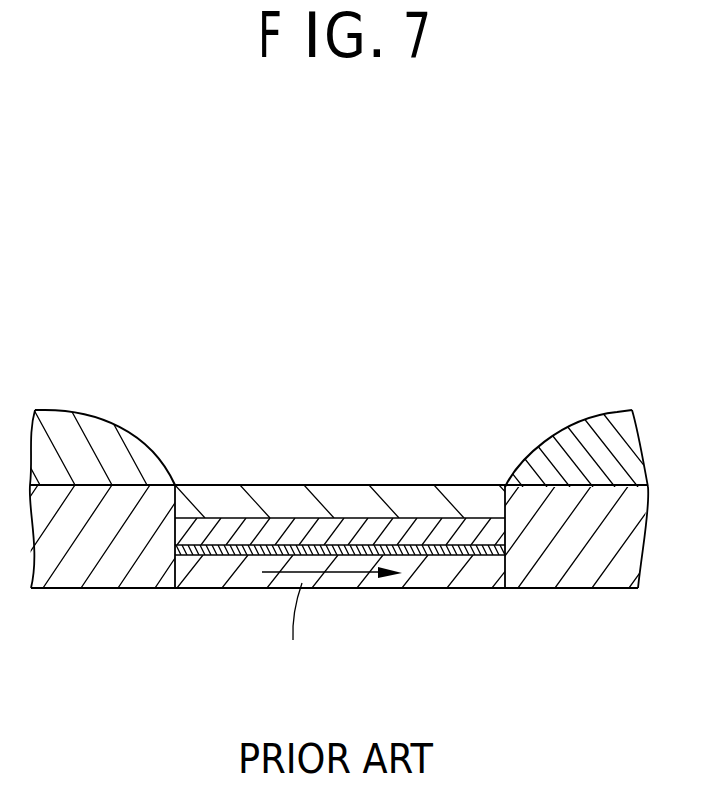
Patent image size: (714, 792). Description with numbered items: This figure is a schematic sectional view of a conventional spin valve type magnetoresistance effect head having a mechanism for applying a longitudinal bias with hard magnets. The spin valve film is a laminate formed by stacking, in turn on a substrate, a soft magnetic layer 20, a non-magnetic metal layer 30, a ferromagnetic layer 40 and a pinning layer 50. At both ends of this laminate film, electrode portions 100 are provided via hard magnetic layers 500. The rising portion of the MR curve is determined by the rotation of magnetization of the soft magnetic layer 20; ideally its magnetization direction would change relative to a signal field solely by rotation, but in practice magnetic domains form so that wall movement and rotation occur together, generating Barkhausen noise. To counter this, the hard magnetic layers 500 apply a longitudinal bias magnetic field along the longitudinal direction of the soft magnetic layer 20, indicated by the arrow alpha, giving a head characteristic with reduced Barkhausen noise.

The electrode portion 100 is at (107, 452).
The hard magnetic layer 500 is at (80, 567).
The pinning layer 50 is at (298, 508).
The ferromagnetic layer 40 is at (362, 532).
The non-magnetic metal layer 30 is at (467, 554).
The soft magnetic layer 20 is at (362, 580).